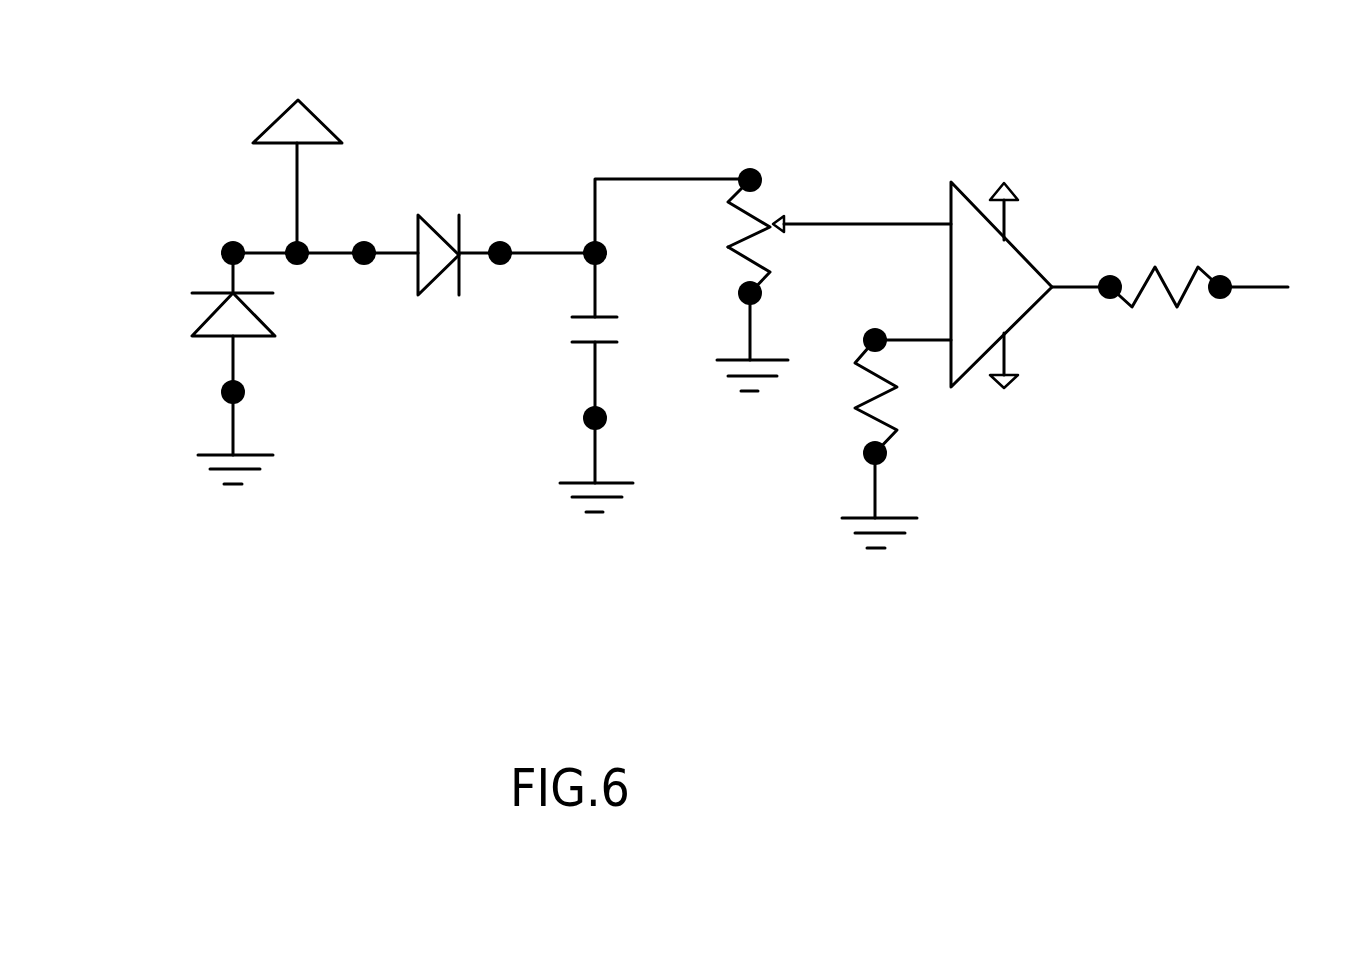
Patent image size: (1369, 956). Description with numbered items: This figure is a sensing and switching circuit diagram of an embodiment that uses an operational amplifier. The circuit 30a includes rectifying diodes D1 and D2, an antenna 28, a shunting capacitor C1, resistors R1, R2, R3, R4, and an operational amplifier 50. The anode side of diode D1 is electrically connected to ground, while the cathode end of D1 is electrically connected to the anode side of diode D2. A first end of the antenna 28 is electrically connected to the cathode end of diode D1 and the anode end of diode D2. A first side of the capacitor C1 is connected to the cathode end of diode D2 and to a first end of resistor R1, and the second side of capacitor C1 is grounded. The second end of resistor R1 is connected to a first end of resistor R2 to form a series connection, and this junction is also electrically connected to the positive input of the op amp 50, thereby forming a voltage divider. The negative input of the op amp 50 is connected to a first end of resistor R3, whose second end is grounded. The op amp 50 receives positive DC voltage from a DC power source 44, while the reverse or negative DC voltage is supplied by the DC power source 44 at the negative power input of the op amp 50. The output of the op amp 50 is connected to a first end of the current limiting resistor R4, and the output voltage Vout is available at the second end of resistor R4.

The antenna 28 is at (325, 78).
The circuit 30a is at (1083, 60).
The DC power source 44 is at (1035, 170).
The operational amplifier 50 is at (1020, 247).
The rectifying diode D1 is at (198, 330).
The rectifying diode D2 is at (430, 218).
The shunting capacitor C1 is at (558, 338).
The resistor R1 is at (763, 208).
The resistor R2 is at (775, 273).
The resistor R3 is at (847, 408).
The current limiting resistor R4 is at (1155, 253).